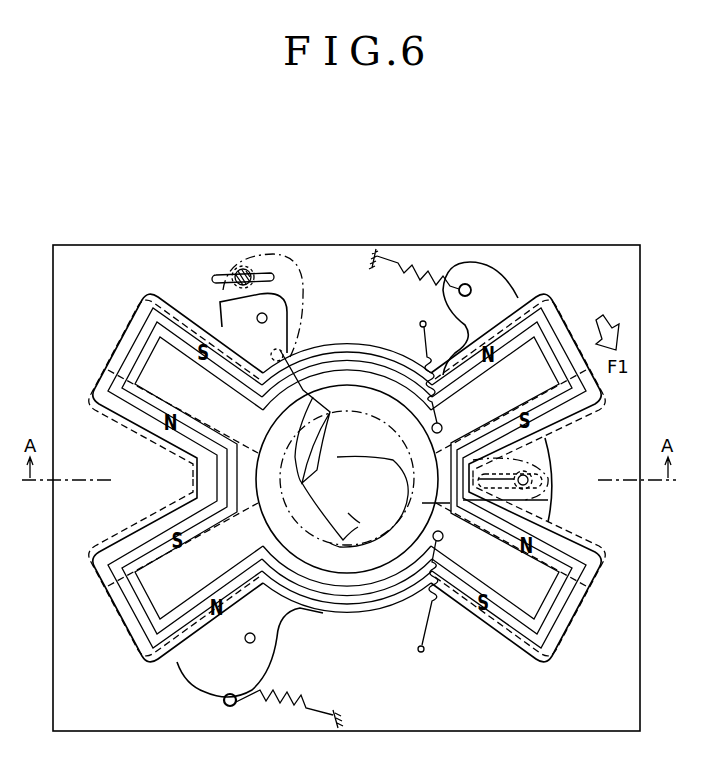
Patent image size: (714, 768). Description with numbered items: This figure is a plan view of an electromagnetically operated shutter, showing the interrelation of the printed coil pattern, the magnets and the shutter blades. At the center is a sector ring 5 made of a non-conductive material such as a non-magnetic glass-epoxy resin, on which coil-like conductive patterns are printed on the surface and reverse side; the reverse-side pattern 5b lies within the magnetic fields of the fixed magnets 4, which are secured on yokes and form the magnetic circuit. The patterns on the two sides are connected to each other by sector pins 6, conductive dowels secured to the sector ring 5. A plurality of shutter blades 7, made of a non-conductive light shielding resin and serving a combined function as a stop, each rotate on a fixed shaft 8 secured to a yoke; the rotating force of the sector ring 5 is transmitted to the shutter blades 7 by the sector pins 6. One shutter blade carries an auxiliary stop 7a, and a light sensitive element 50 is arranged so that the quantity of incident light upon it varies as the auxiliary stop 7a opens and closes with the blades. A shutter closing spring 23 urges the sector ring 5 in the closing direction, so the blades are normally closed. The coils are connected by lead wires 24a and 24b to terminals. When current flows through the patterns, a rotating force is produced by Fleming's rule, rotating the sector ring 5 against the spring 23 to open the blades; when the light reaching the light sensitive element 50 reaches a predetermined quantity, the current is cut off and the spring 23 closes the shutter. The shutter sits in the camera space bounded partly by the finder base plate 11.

The magnet 4 is at (160, 292).
The sector ring 5 is at (196, 673).
The coil-like conductive pattern 5b is at (525, 298).
The sector pin 6 is at (268, 318).
The shutter blade 7 is at (383, 470).
The auxiliary stop 7a is at (220, 282).
The fixed shaft 8 is at (281, 352).
The view finder base plate 11 is at (373, 450).
The shutter closing spring 23 is at (416, 268).
The lead wire 24a is at (421, 327).
The lead wire 24b is at (424, 650).
The light sensitive element 50 is at (244, 268).